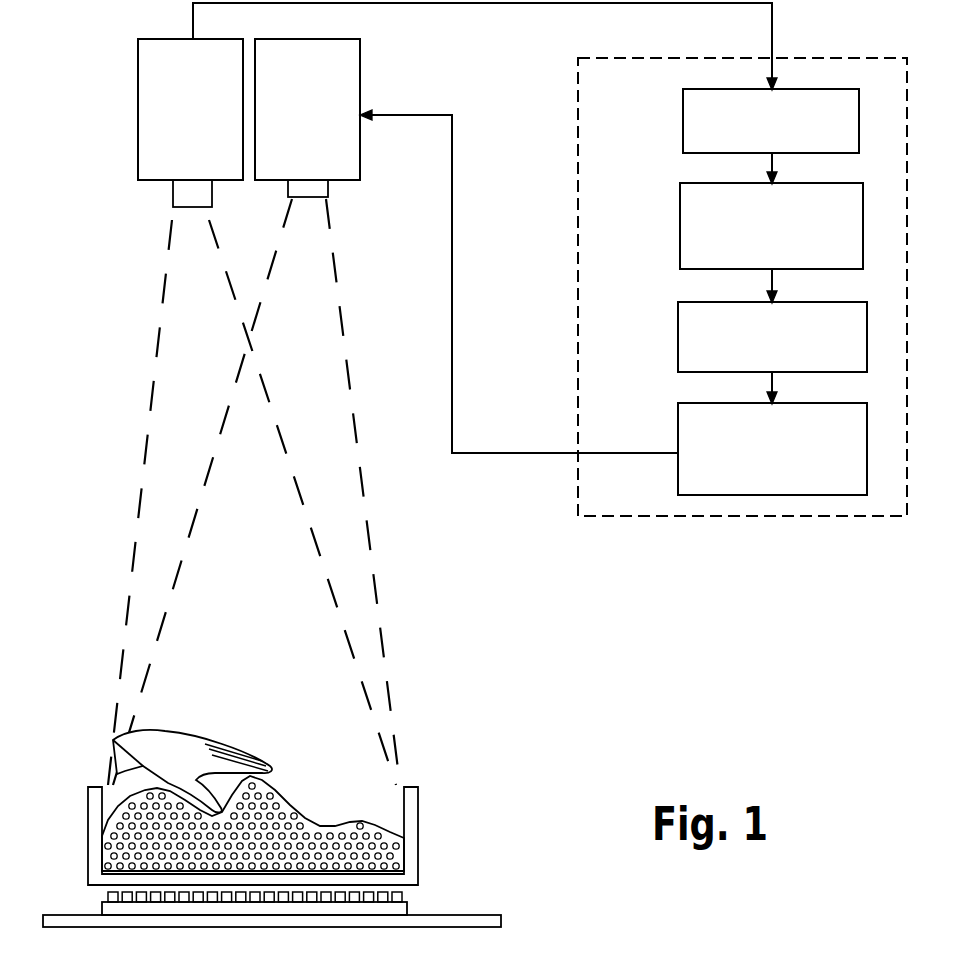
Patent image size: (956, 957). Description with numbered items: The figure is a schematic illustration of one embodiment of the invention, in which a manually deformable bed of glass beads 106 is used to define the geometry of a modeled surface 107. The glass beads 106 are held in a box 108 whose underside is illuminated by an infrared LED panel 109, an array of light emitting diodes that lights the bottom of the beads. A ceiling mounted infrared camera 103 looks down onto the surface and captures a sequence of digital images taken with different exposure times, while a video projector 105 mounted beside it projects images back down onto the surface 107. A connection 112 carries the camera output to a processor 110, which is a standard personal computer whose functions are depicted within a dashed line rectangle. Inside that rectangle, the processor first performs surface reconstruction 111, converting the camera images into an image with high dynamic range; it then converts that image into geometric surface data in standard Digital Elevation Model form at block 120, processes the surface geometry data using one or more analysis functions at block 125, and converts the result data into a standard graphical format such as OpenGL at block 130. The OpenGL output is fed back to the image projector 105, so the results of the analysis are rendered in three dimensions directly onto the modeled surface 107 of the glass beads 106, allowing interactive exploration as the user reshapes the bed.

The infrared camera 103 is at (138, 103).
The video projector 105 is at (362, 66).
The glass beads 106 is at (278, 782).
The modeled surface 107 is at (298, 792).
The box 108 is at (420, 802).
The infrared LED panel 109 is at (408, 907).
The processor 110 is at (576, 495).
The surface reconstruction 111 is at (683, 132).
The data connection from camera to computing system 112 is at (534, 4).
The Digital Elevation Model conversion 120 is at (680, 210).
The analysis functions 125 is at (678, 318).
The OpenGL format conversion 130 is at (678, 433).